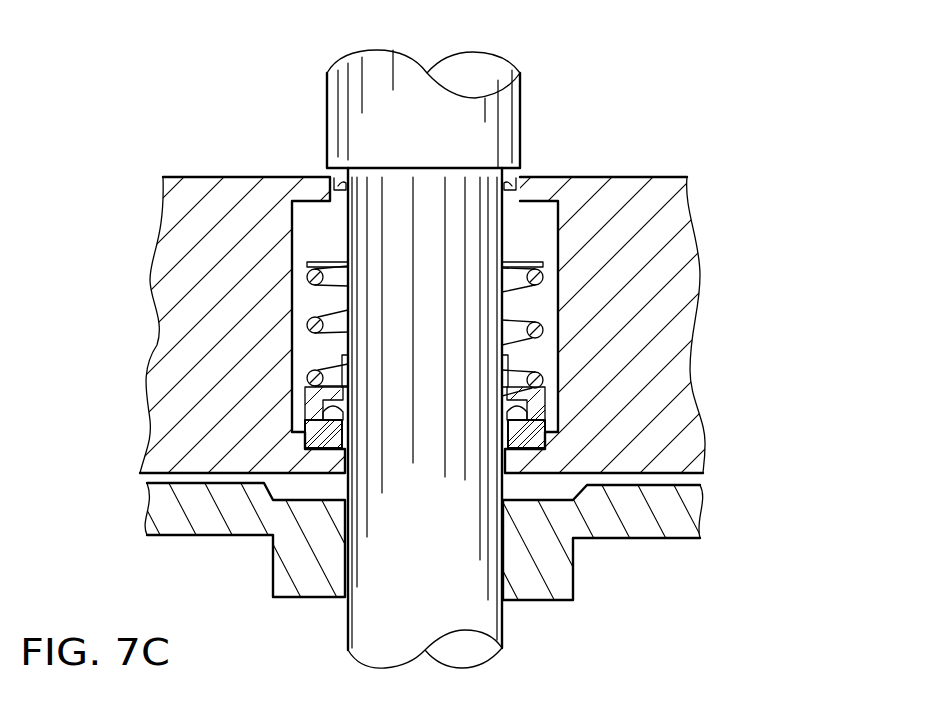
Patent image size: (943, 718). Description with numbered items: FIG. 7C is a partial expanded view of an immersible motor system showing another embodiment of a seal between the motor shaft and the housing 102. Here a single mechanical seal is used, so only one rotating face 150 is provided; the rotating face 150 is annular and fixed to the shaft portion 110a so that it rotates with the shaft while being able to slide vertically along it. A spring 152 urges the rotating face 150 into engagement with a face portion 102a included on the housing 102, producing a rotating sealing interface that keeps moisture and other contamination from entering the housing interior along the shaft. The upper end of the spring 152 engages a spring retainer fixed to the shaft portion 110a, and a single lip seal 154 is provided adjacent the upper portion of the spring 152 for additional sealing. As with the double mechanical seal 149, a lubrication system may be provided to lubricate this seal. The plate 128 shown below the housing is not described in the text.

The housing 102 is at (190, 190).
The face portion 102a is at (305, 392).
The shaft portion 110a is at (370, 590).
The mounting plate 128 is at (165, 512).
The double mechanical seal 149 is at (578, 392).
The rotating face 150 is at (305, 440).
The spring 152 is at (543, 333).
The lip seal 154 is at (332, 168).